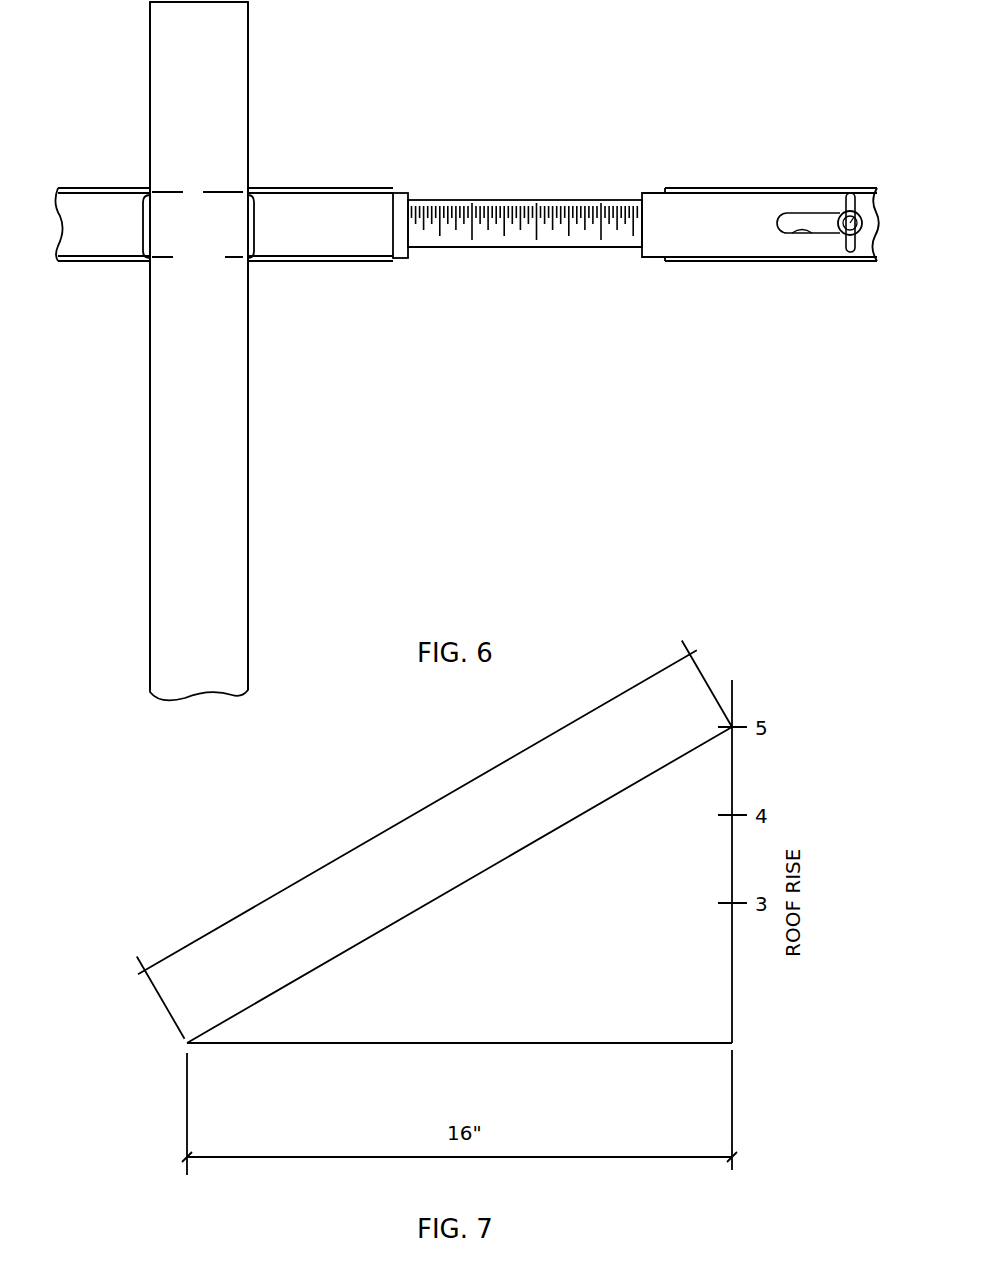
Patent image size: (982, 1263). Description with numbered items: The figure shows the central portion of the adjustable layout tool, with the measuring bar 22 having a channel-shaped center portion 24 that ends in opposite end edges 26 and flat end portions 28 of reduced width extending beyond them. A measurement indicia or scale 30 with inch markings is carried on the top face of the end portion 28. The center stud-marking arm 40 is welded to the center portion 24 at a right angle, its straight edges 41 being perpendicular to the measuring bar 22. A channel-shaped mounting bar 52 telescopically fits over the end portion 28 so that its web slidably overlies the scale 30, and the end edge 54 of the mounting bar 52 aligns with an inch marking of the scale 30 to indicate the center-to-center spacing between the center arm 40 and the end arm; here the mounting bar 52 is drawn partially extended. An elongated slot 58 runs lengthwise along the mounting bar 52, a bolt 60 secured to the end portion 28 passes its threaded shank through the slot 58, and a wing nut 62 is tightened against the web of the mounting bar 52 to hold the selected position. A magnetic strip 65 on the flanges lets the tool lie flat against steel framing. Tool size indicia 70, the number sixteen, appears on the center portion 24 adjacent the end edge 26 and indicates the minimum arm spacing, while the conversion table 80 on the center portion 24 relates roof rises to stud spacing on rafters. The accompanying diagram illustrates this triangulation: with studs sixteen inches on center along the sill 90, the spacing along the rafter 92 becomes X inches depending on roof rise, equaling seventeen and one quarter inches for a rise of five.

In FIG. 6, the measuring bar 22 is at (272, 263).
In FIG. 6, the center portion 24 is at (112, 207).
In FIG. 6, the end edges 26 is at (413, 223).
In FIG. 6, the end portions 28 is at (425, 250).
In FIG. 6, the measurement indicia 30 is at (453, 236).
In FIG. 6, the center stud-marking arm 40 is at (148, 32).
In FIG. 6, the straight edges 41 is at (248, 60).
In FIG. 6, the mounting bars 52 is at (673, 246).
In FIG. 6, the end edges 54 is at (640, 233).
In FIG. 6, the elongated slot 58 is at (812, 234).
In FIG. 6, the bolts 60 is at (848, 194).
In FIG. 6, the wing nuts 62 is at (851, 253).
In FIG. 6, the magnetic strip 65 is at (730, 188).
In FIG. 6, the tool size indicia 70 is at (392, 225).
In FIG. 6, the conversion table 80 is at (173, 415).
In FIG. 7, the sill 90 is at (532, 1043).
In FIG. 7, the rafter 92 is at (540, 838).